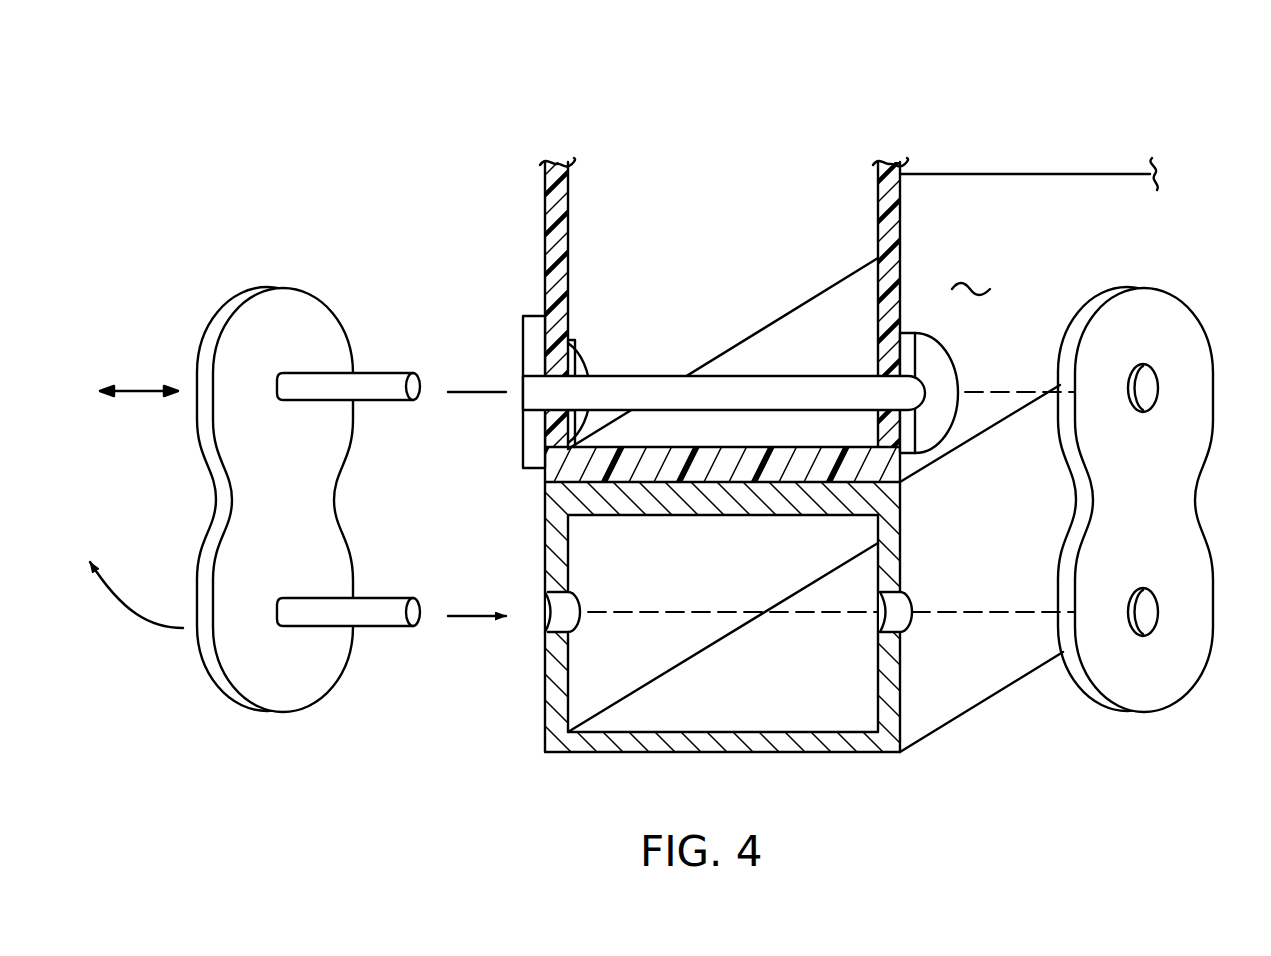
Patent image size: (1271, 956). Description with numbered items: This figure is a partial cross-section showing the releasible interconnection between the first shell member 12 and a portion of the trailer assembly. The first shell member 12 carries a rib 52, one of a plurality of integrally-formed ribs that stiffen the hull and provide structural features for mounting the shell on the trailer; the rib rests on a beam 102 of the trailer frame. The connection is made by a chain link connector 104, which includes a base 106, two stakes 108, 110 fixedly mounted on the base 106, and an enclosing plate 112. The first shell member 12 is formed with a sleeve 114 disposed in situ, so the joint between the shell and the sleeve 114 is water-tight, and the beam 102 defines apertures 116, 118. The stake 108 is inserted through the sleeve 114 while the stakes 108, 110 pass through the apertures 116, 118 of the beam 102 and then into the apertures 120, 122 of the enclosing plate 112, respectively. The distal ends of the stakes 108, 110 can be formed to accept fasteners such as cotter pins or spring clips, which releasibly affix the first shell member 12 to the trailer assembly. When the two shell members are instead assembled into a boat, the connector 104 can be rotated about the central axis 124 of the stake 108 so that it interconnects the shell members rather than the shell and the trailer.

The first shell member 12 is at (1042, 156).
The rib 52 is at (971, 279).
The beam 102 is at (950, 690).
The chain link connector 104 is at (275, 459).
The base 106 is at (298, 690).
The stake 108 is at (365, 378).
The stake 110 is at (358, 606).
The enclosing plate 112 is at (1164, 518).
The sleeve 114 is at (737, 368).
The aperture 116 is at (547, 628).
The aperture 118 is at (902, 634).
The aperture 120 is at (1146, 372).
The aperture 122 is at (1144, 598).
The central axis 124 is at (137, 390).